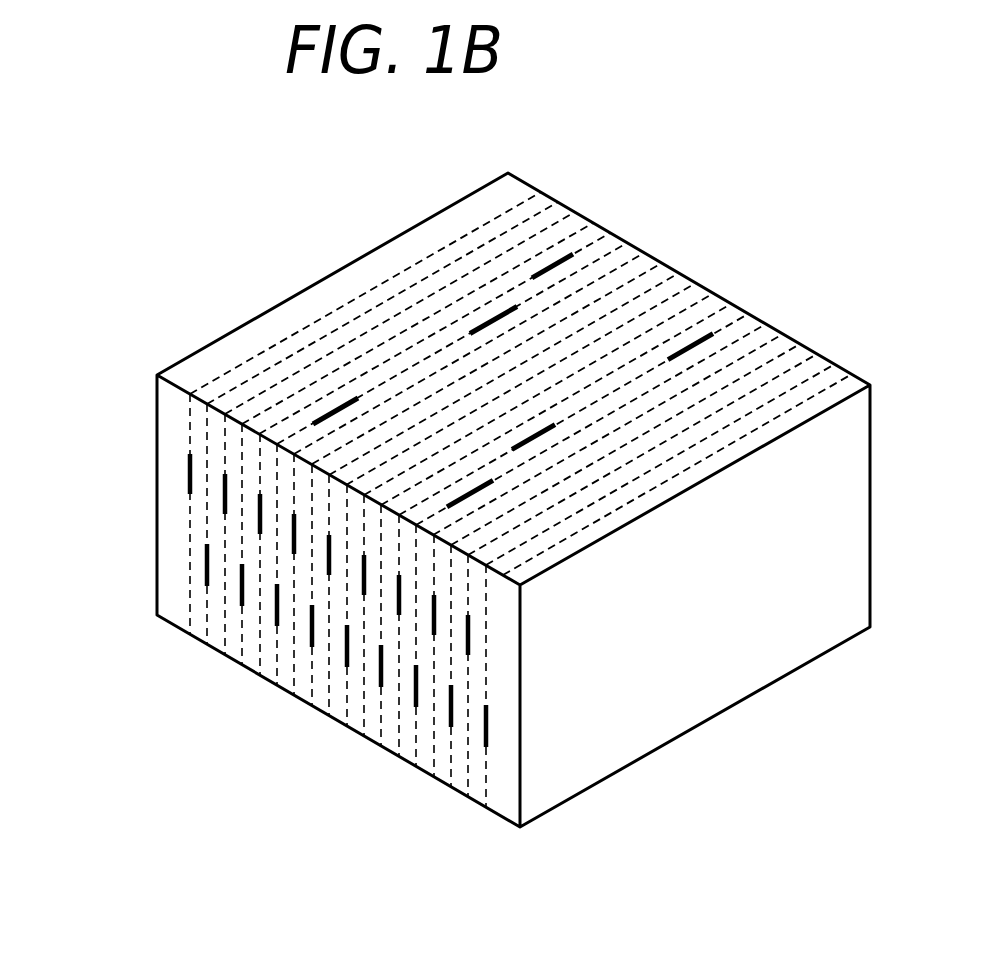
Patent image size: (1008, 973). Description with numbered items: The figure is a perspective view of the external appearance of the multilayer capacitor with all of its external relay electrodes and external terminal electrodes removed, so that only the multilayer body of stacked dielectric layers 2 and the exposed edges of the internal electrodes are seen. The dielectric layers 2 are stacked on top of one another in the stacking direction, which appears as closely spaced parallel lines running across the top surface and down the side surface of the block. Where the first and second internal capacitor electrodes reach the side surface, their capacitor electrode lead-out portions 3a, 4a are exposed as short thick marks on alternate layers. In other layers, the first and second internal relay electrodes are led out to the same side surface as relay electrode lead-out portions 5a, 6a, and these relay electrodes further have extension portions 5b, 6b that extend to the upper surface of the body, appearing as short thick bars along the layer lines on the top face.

The dielectric layer 2 is at (743, 328).
The capacitor electrode lead-out portion 3a is at (206, 557).
The capacitor electrode lead-out portion 4a is at (189, 470).
The relay electrode lead-out portion 5a is at (276, 615).
The relay electrode lead-out portion 6a is at (259, 522).
The extension portion 5b is at (473, 490).
The extension portion 6b is at (540, 434).